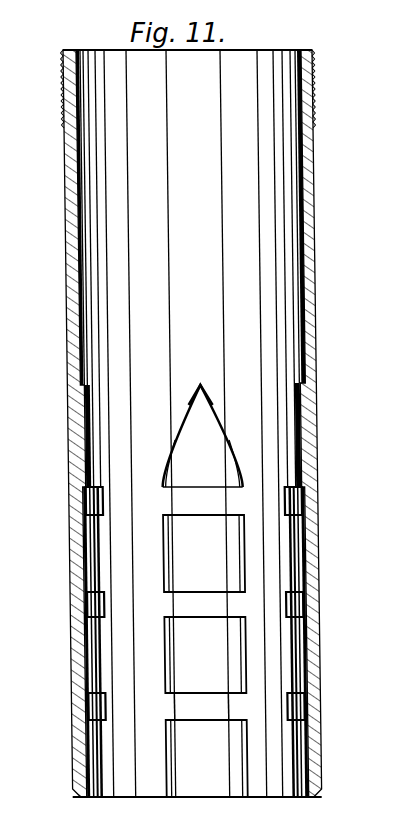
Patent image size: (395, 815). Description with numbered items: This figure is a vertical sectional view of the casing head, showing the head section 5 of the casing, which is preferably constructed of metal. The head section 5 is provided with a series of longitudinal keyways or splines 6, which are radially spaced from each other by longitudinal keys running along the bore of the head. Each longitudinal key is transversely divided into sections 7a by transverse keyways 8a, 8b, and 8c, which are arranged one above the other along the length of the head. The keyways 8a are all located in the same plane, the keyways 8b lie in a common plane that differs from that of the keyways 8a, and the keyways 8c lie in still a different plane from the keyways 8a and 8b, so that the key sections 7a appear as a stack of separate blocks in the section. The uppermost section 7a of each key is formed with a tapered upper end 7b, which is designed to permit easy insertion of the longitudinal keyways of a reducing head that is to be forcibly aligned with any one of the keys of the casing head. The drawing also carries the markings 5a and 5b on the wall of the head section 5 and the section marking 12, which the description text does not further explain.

The gun barrel 5 is at (318, 463).
The barrel liner upper portion 5a is at (317, 346).
The barrel liner lower portion 5b is at (320, 598).
The bore tube 6 is at (252, 634).
The projectile ogive 7a is at (205, 428).
The projectile tip 7b is at (197, 386).
The guide rib 8a is at (178, 500).
The projectile body segment 8b is at (225, 602).
The projectile rear segment 8c is at (232, 705).
The section line 12 is at (123, 655).